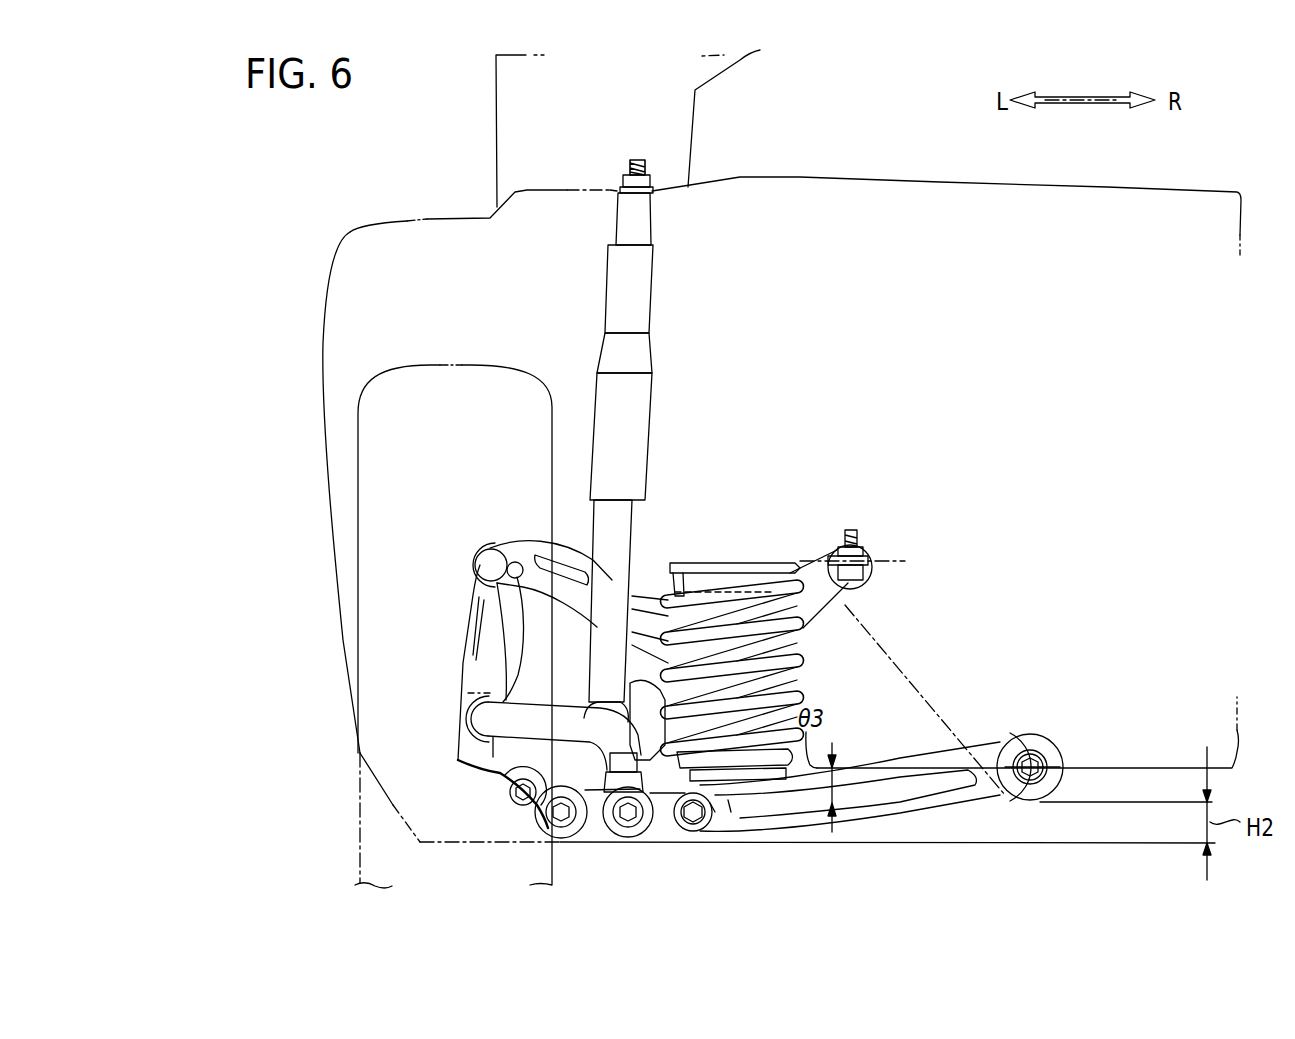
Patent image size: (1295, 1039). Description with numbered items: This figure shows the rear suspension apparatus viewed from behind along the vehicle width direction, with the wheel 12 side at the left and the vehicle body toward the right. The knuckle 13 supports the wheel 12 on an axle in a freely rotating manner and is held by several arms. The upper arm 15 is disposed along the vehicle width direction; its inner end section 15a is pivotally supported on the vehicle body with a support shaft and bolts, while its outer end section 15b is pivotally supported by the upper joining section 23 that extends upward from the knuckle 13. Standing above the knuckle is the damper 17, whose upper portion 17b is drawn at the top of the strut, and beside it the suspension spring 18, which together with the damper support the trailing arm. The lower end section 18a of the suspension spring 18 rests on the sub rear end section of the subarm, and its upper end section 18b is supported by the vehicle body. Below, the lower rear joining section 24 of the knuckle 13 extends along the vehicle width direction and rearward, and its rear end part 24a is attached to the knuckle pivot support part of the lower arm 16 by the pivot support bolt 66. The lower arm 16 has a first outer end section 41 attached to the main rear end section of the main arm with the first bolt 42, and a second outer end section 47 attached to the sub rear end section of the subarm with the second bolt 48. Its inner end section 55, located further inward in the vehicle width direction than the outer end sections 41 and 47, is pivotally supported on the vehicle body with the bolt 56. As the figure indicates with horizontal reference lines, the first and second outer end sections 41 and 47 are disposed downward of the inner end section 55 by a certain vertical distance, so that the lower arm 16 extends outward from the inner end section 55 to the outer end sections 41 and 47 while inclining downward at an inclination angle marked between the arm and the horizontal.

The wheel 12 is at (358, 437).
The knuckle 13 is at (458, 683).
The upper arm 15 is at (575, 548).
The inner end section 15a is at (858, 548).
The outer end section 15b is at (490, 548).
The lower arm 16 is at (890, 815).
The damper 17 is at (640, 310).
The shock absorber upper mount 17b is at (645, 206).
The suspension spring 18 is at (800, 656).
The lower end section 18a is at (786, 735).
The upper end section 18b is at (780, 590).
The upper joining section 23 is at (503, 615).
The lower rear joining section 24 is at (523, 725).
The rear end part 24a is at (618, 827).
The first outer end section 41 is at (540, 813).
The first bolt 42 is at (561, 820).
The second outer end section 47 is at (720, 818).
The second bolt 48 is at (693, 815).
The inner end section 55 is at (1025, 740).
The bolt 56 is at (1040, 758).
The pivot support bolt 66 is at (633, 813).